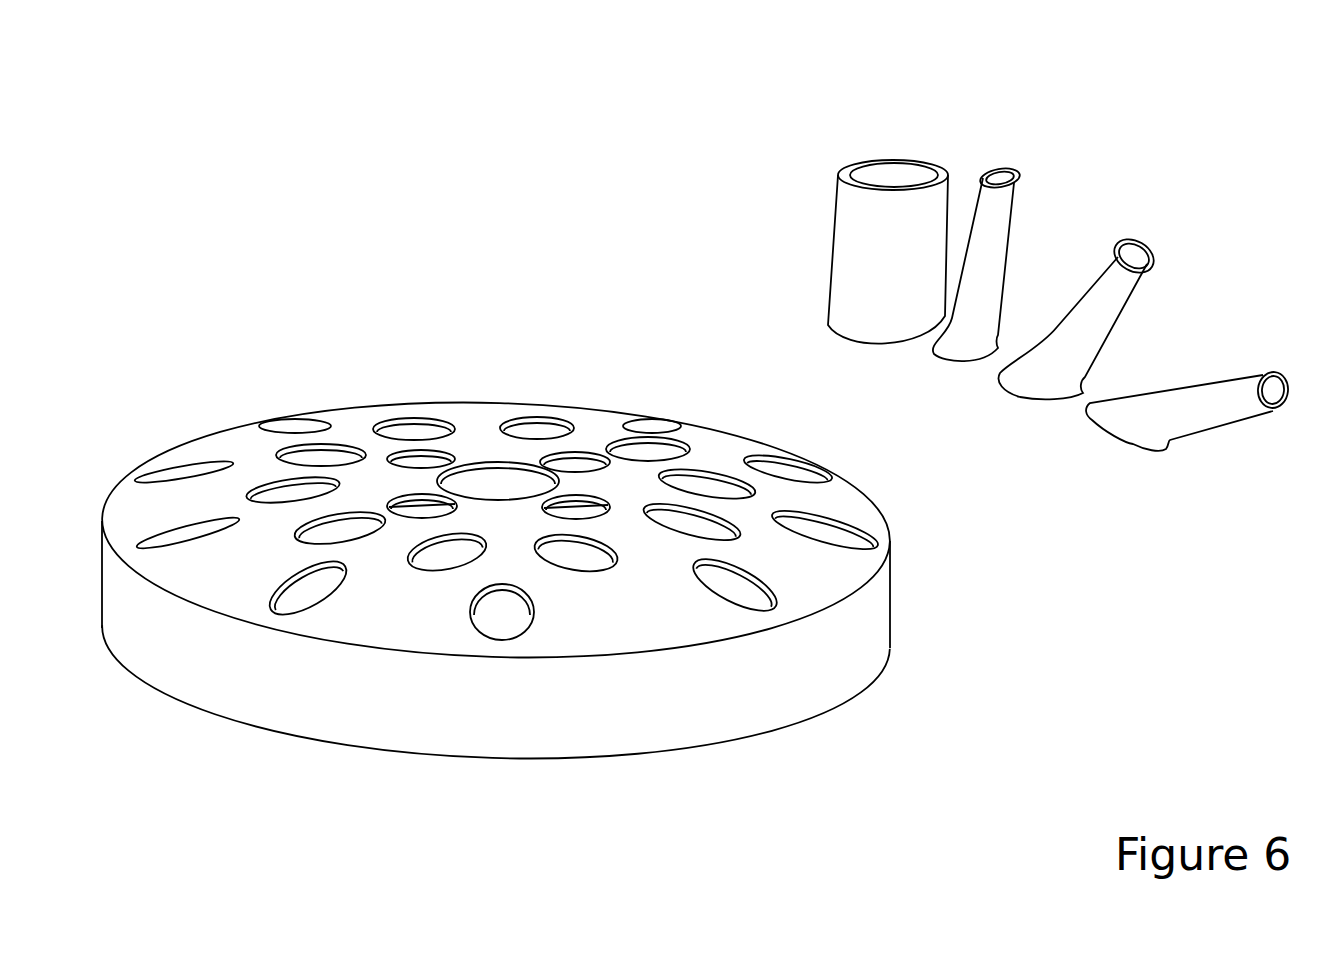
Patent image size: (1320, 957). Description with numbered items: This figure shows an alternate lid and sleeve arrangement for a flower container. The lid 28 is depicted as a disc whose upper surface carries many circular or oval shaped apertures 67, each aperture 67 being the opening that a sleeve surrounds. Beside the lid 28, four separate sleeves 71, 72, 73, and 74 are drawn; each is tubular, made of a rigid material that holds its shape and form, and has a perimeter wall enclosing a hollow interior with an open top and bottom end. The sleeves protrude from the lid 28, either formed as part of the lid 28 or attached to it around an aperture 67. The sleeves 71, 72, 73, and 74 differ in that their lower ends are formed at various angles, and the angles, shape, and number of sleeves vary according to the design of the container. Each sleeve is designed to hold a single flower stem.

The lid 28 is at (590, 432).
The aperture 67 is at (750, 591).
The sleeve 71 is at (890, 168).
The sleeve 72 is at (1012, 170).
The sleeve 73 is at (1136, 253).
The sleeve 74 is at (1267, 380).